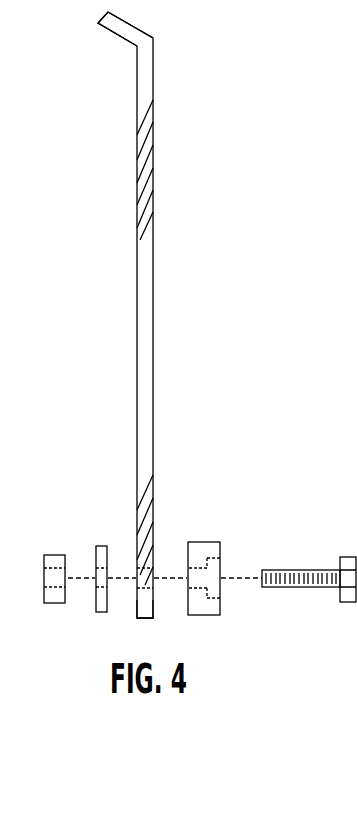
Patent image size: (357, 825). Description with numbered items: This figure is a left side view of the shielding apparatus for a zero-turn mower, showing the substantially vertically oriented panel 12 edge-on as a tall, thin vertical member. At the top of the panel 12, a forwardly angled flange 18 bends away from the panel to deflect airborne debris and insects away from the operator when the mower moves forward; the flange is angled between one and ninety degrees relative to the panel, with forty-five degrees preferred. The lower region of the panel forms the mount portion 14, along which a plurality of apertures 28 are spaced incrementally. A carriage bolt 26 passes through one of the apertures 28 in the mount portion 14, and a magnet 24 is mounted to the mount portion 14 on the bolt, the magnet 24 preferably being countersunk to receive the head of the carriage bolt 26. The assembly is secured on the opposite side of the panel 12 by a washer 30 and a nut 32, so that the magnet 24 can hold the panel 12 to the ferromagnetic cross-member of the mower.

The panel 12 is at (153, 296).
The forwardly angled flange 18 is at (113, 36).
The mount portion 14 is at (137, 612).
The aperture 28 is at (143, 579).
The nut 32 is at (57, 554).
The washer 30 is at (100, 545).
The magnet 24 is at (203, 542).
The carriage bolt 26 is at (294, 568).